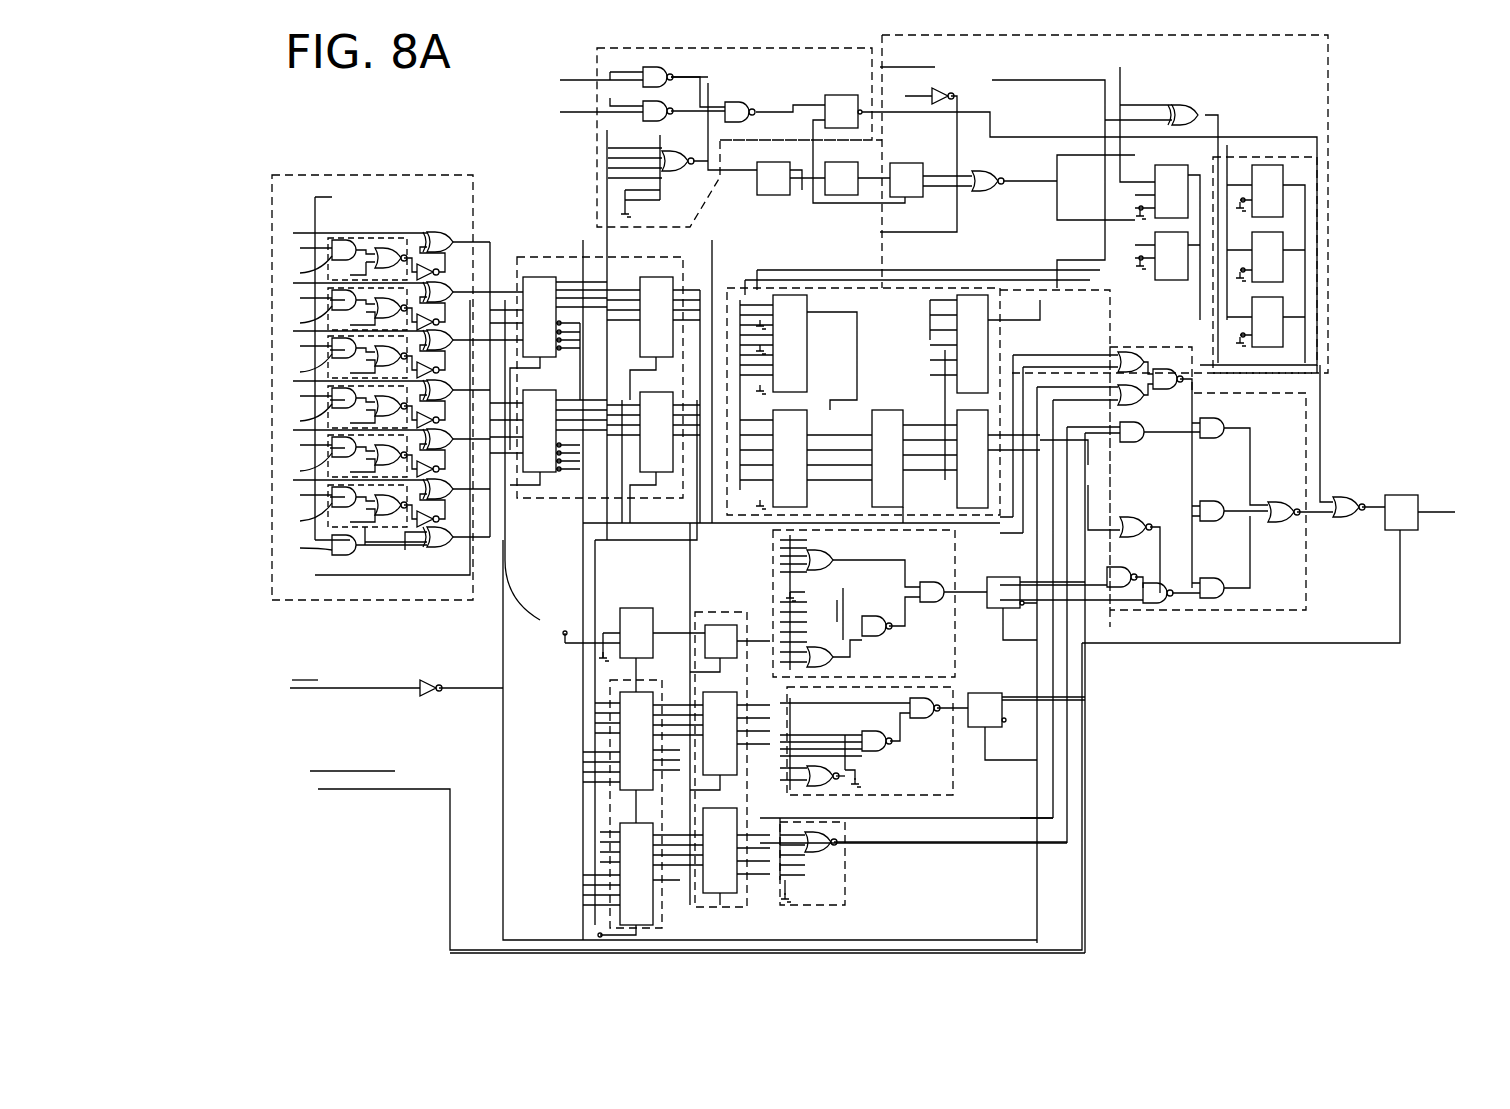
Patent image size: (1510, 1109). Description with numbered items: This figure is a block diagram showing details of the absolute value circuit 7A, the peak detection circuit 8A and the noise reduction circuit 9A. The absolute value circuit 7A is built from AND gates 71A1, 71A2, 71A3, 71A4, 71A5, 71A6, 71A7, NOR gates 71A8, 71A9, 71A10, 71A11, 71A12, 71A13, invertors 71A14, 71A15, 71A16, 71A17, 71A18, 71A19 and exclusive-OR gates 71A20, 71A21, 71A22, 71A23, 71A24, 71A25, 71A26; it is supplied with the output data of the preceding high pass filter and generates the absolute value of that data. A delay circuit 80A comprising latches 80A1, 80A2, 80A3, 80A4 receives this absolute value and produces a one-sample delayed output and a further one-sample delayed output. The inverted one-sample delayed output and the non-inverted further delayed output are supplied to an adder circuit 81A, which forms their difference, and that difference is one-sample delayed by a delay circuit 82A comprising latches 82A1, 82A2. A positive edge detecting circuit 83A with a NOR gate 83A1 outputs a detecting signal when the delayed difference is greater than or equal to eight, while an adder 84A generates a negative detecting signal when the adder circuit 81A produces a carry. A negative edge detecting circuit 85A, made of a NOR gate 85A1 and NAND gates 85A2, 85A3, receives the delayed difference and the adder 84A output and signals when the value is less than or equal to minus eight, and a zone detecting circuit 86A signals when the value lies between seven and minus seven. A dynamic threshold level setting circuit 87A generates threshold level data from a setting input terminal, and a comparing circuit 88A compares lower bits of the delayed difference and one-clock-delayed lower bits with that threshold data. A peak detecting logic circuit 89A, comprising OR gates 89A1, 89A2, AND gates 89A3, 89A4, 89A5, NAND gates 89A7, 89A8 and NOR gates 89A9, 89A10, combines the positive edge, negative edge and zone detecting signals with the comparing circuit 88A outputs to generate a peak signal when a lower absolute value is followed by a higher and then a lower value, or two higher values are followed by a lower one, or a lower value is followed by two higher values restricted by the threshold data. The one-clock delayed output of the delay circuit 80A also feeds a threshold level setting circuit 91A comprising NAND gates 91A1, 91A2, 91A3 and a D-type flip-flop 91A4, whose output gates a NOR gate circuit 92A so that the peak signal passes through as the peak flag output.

The absolute value circuit 7A is at (285, 600).
The peak detection circuit 8A is at (1130, 788).
The noise reduction circuit 9A is at (1355, 105).
The AND gate 71A1 is at (350, 246).
The AND gate 71A2 is at (350, 296).
The AND gate 71A3 is at (350, 344).
The AND gate 71A4 is at (350, 394).
The AND gate 71A5 is at (350, 443).
The AND gate 71A6 is at (350, 493).
The AND gate 71A7 is at (350, 542).
The NOR gate 71A8 is at (340, 260).
The NOR gate 71A9 is at (340, 311).
The NOR gate 71A10 is at (340, 360).
The NOR gate 71A11 is at (340, 409).
The NOR gate 71A12 is at (340, 458).
The NOR gate 71A13 is at (340, 508).
The invertor 71A14 is at (396, 262).
The invertor 71A15 is at (440, 395).
The invertor 71A16 is at (430, 500).
The invertor 71A17 is at (490, 480).
The invertor 71A18 is at (480, 520).
The invertor 71A19 is at (415, 523).
The exclusive-OR gate 71A20 is at (420, 265).
The exclusive-OR gate 71A21 is at (445, 235).
The exclusive-OR gate 71A22 is at (430, 450).
The exclusive-OR gate 71A23 is at (445, 520).
The exclusive-OR gate 71A24 is at (485, 500).
The exclusive-OR gate 71A25 is at (478, 545).
The exclusive-OR gate 71A26 is at (437, 548).
The delay circuit 80A is at (523, 265).
The latch 80A1 is at (548, 276).
The latch 80A2 is at (545, 478).
The latch 80A3 is at (652, 276).
The latch 80A4 is at (657, 478).
The adder circuit 81A is at (600, 935).
The delay circuit 82A is at (740, 895).
The latch 82A1 is at (725, 670).
The latch 82A2 is at (725, 898).
The positive edge detecting circuit 83A is at (848, 905).
The NOR gate 83A1 is at (836, 848).
The adder 84A is at (655, 610).
The negative edge detecting circuit 85A is at (953, 778).
The NOR gate 85A1 is at (838, 778).
The NAND gate 85A2 is at (882, 750).
The NAND gate 85A3 is at (920, 698).
The zone detecting circuit 86A is at (955, 662).
The dynamic threshold level setting circuit 87A is at (1325, 225).
The comparing circuit 88A is at (732, 275).
The peak detecting logic circuit 89A is at (1306, 596).
The OR gate 89A1 is at (1145, 355).
The OR gate 89A2 is at (1150, 415).
The AND gate 89A3 is at (1150, 450).
The AND gate 89A4 is at (1226, 425).
The AND gate 89A5 is at (1204, 506).
The NAND gate 89A7 is at (1120, 576).
The NAND gate 89A8 is at (1155, 605).
The NOR gate 89A9 is at (1205, 520).
The NOR gate 89A10 is at (1298, 518).
The threshold level setting circuit 91A is at (597, 55).
The NAND gate 91A1 is at (672, 77).
The NAND gate 91A2 is at (695, 92).
The NAND gate 91A3 is at (755, 108).
The D-type flip-flop 91A4 is at (832, 95).
The NOR gate circuit 92A is at (1345, 498).